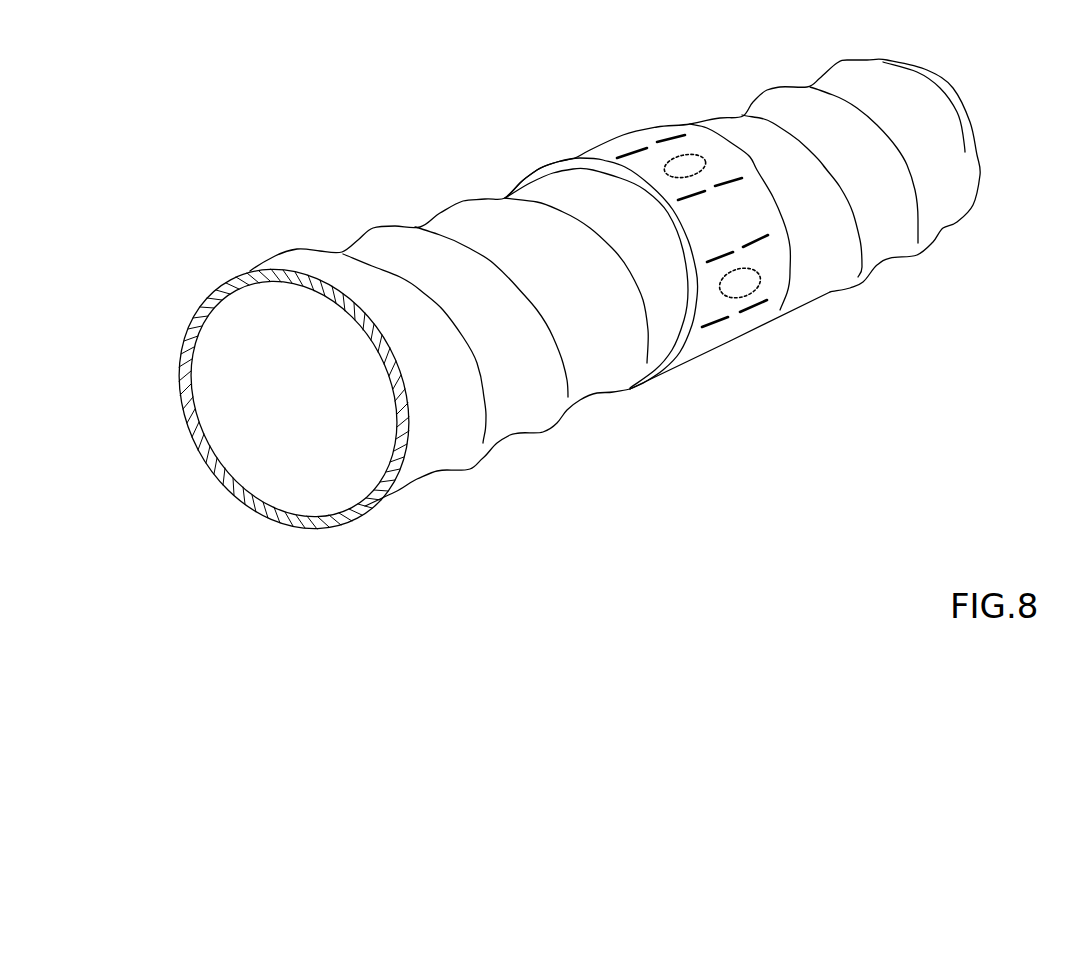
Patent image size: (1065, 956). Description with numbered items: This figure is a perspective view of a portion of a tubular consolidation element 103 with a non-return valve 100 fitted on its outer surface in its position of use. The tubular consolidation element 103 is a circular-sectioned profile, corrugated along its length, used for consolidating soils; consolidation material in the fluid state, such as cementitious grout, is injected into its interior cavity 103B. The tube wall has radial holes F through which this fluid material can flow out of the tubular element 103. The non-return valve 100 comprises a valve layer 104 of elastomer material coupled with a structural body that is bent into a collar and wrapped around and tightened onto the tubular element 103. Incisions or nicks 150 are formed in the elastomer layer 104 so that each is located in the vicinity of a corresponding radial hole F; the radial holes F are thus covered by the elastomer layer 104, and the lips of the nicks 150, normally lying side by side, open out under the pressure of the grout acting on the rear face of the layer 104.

The non-return valve 100 is at (637, 105).
The tubular consolidation element 103 is at (453, 217).
The cavity 103B is at (263, 480).
The valve layer of elastomer material 104 is at (592, 157).
The nicks 150 is at (765, 240).
The radial hole F is at (697, 157).